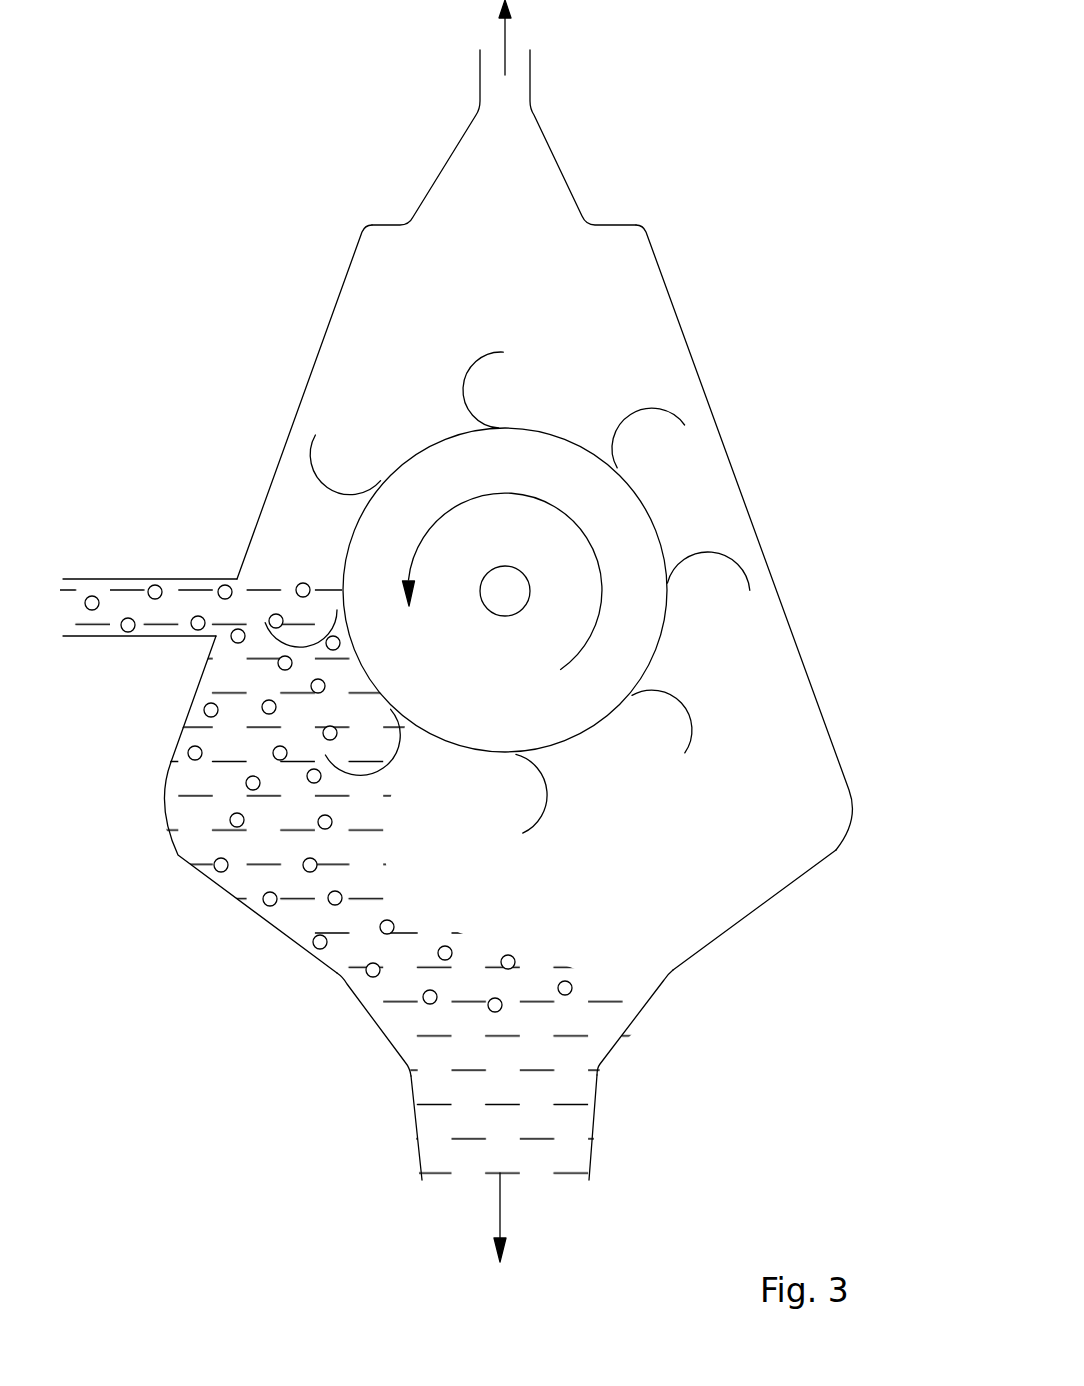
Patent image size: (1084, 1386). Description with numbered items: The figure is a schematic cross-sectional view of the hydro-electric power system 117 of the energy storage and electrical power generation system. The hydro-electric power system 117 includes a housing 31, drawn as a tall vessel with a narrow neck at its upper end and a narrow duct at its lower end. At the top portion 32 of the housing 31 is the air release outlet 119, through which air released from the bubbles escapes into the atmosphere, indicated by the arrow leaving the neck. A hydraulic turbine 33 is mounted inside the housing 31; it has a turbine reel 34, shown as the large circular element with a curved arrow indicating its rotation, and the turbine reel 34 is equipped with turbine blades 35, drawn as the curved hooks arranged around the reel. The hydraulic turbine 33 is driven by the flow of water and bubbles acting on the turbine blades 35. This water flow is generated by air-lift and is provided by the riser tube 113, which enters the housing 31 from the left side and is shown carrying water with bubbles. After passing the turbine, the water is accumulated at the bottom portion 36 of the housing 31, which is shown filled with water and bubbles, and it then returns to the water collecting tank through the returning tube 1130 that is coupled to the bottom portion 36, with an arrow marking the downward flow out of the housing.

The air release outlet 119 is at (513, 60).
The top portion 32 is at (590, 191).
The turbine blades 35 is at (470, 398).
The hydro-electric power system 117 is at (775, 502).
The housing 31 is at (801, 657).
The riser tube 113 is at (150, 579).
The turbine reel 34 is at (373, 686).
The hydraulic turbine 33 is at (442, 690).
The bottom portion 36 is at (327, 1027).
The returning tube 1130 is at (593, 1117).